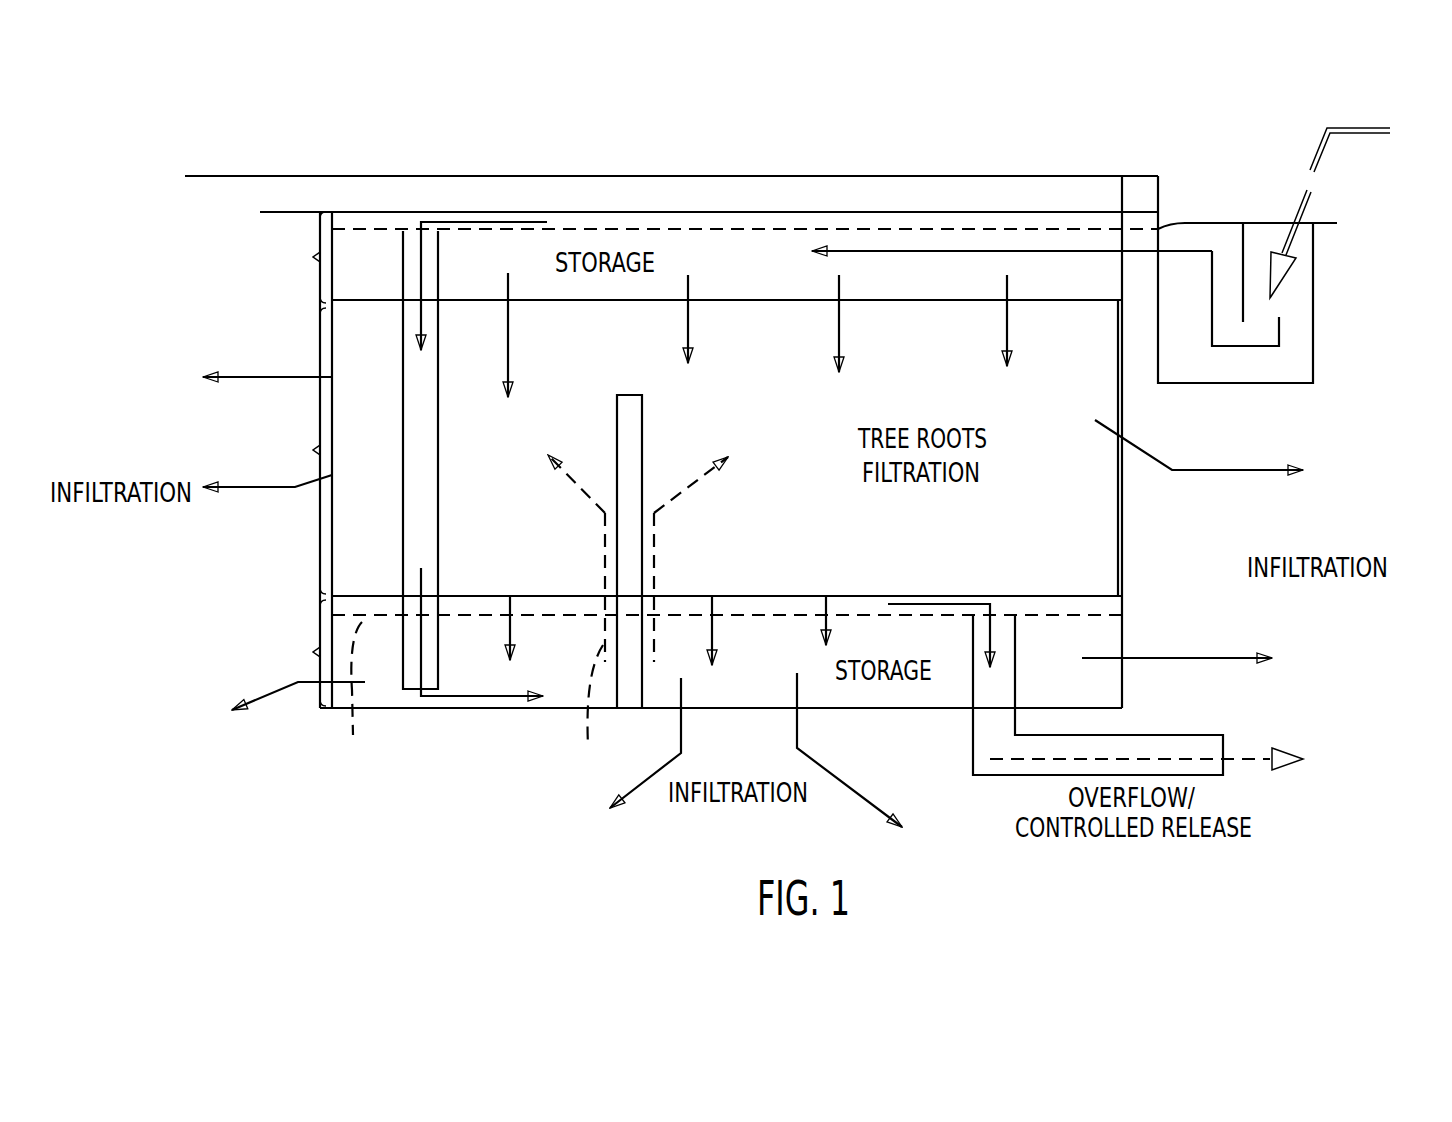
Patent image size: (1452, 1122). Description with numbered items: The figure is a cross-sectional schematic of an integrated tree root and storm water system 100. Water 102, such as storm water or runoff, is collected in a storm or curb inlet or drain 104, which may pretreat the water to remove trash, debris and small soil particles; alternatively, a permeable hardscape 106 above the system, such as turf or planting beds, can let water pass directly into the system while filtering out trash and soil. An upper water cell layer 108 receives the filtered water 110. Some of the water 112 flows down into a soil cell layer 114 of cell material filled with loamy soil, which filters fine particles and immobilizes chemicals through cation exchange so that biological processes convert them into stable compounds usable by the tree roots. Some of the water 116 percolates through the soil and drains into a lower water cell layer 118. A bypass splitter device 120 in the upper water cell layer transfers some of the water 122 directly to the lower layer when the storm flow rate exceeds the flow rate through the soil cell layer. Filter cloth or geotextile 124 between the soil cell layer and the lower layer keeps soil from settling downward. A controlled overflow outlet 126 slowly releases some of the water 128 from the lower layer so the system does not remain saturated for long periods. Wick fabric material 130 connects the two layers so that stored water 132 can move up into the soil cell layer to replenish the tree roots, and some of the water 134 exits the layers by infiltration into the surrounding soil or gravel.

The integrated tree root and storm water system 100 is at (367, 814).
The water 102 is at (1352, 130).
The storm or curb inlet or drain 104 is at (1313, 270).
The hardscape 106 is at (737, 205).
The upper water cell layer 108 is at (294, 257).
The filtered water 110 is at (902, 253).
The water 112 is at (507, 285).
The soil cell layer 114 is at (294, 451).
The water 116 is at (514, 650).
The lower water cell layer 118 is at (298, 655).
The bypass splitter device 120 is at (438, 430).
The water 122 is at (471, 220).
The filter cloth or geotextile 124 is at (347, 691).
The controlled overflow outlet 126 is at (973, 748).
The water 128 is at (992, 640).
The wick fabric material 130 is at (628, 690).
The water 132 is at (638, 617).
The water 134 is at (243, 377).